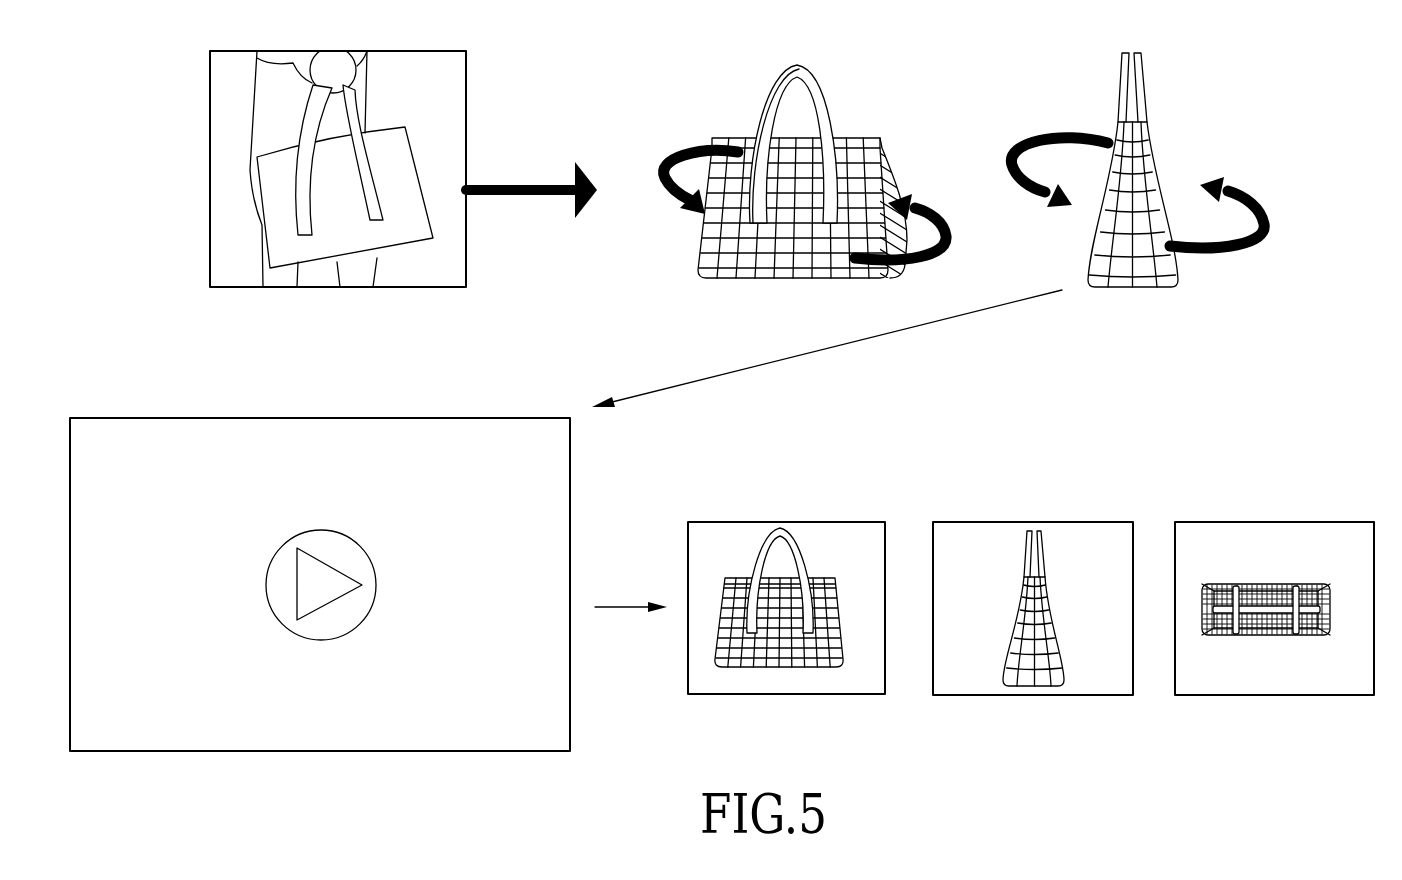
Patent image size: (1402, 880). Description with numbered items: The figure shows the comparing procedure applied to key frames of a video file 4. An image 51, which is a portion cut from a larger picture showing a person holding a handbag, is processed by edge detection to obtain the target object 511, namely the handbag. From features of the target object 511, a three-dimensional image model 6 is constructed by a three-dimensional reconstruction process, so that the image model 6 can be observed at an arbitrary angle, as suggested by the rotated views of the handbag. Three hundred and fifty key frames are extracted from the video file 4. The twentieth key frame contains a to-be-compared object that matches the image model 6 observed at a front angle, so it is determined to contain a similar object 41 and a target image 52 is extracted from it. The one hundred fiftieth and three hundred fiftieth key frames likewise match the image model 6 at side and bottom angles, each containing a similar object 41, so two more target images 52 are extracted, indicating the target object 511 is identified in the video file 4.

The video file 4 is at (76, 400).
The image model 6 is at (882, 122).
The similar object 41 is at (843, 640).
The image 51 is at (210, 104).
The target object 511 is at (263, 220).
The target image 52 is at (688, 668).